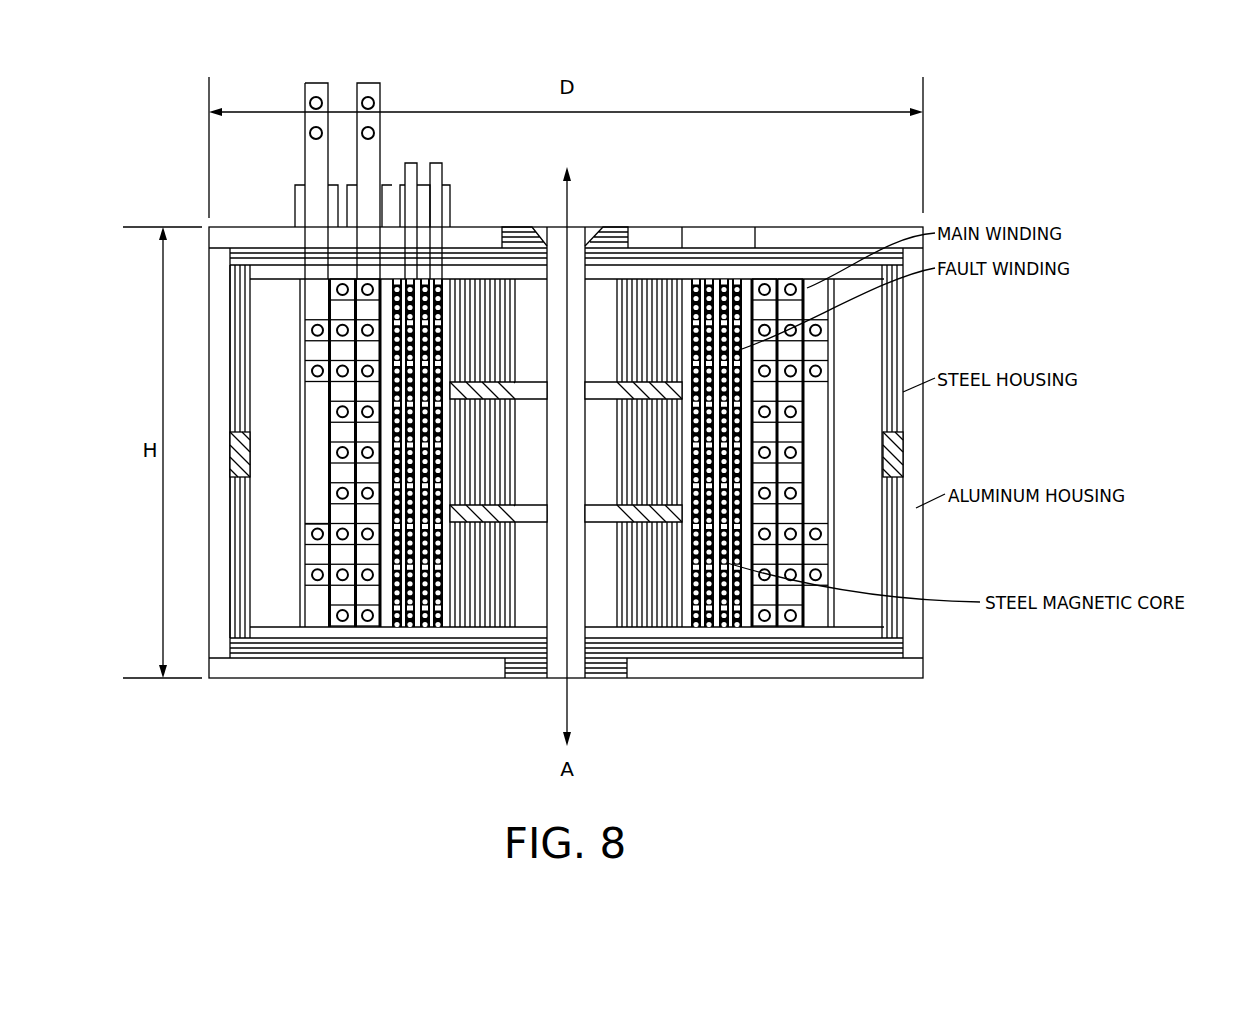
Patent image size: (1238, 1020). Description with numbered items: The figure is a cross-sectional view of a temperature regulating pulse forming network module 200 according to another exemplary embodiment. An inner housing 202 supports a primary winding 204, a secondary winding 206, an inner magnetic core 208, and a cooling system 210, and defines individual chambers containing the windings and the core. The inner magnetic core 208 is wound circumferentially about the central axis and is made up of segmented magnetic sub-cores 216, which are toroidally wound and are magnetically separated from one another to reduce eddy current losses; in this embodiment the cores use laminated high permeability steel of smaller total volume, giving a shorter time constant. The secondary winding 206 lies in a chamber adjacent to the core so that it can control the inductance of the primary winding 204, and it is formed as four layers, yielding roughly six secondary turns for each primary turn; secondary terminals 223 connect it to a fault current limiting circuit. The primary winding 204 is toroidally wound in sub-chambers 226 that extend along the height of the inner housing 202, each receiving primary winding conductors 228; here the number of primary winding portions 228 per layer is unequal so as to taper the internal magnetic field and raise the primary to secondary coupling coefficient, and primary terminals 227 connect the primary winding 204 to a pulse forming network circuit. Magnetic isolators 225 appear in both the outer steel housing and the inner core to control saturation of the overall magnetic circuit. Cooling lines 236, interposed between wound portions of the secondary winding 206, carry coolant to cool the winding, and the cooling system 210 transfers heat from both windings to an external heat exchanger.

The temperature regulating pulse forming network module 200 is at (172, 180).
The inner housing 202 is at (523, 232).
The primary winding 204 is at (310, 338).
The secondary winding 206 is at (435, 628).
The inner magnetic core 208 is at (597, 285).
The cooling system 210 is at (267, 232).
The segmented magnetic sub-core 216 is at (525, 330).
The secondary terminals 223 is at (437, 163).
The magnetic isolators 225 is at (510, 390).
The sub-chambers 226 is at (363, 620).
The primary terminals 227 is at (368, 83).
The primary winding conductor 228 is at (313, 575).
The cooling lines 236 is at (739, 373).